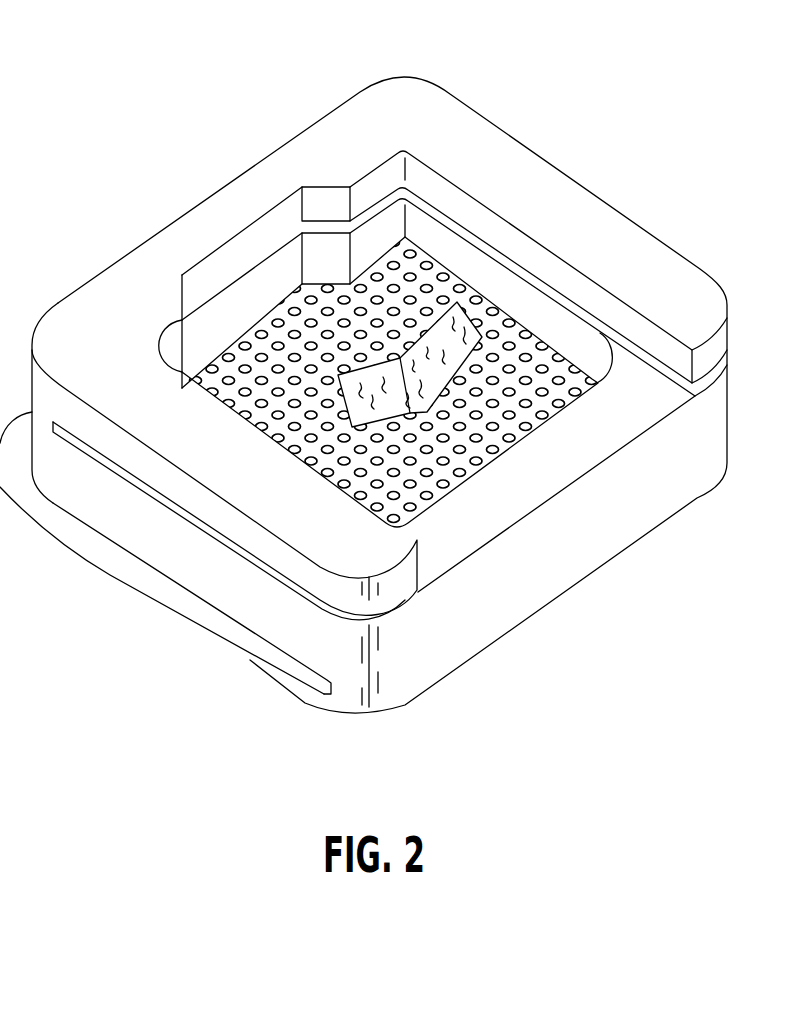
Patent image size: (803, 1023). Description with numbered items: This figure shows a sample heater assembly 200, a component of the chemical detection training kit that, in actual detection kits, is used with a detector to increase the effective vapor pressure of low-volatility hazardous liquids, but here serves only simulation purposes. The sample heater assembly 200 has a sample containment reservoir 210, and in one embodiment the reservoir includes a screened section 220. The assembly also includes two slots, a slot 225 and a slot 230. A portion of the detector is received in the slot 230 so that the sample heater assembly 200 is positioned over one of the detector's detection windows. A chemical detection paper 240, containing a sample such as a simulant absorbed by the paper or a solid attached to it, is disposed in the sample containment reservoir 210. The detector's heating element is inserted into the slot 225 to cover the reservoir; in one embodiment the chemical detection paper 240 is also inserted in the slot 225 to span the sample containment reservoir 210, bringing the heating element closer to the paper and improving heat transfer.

The sample heater assembly 200 is at (193, 80).
The sample containment reservoir 210 is at (412, 284).
The screened section 220 is at (588, 290).
The slot 225 is at (293, 588).
The slot 230 is at (204, 608).
The chemical detection paper 240 is at (523, 347).